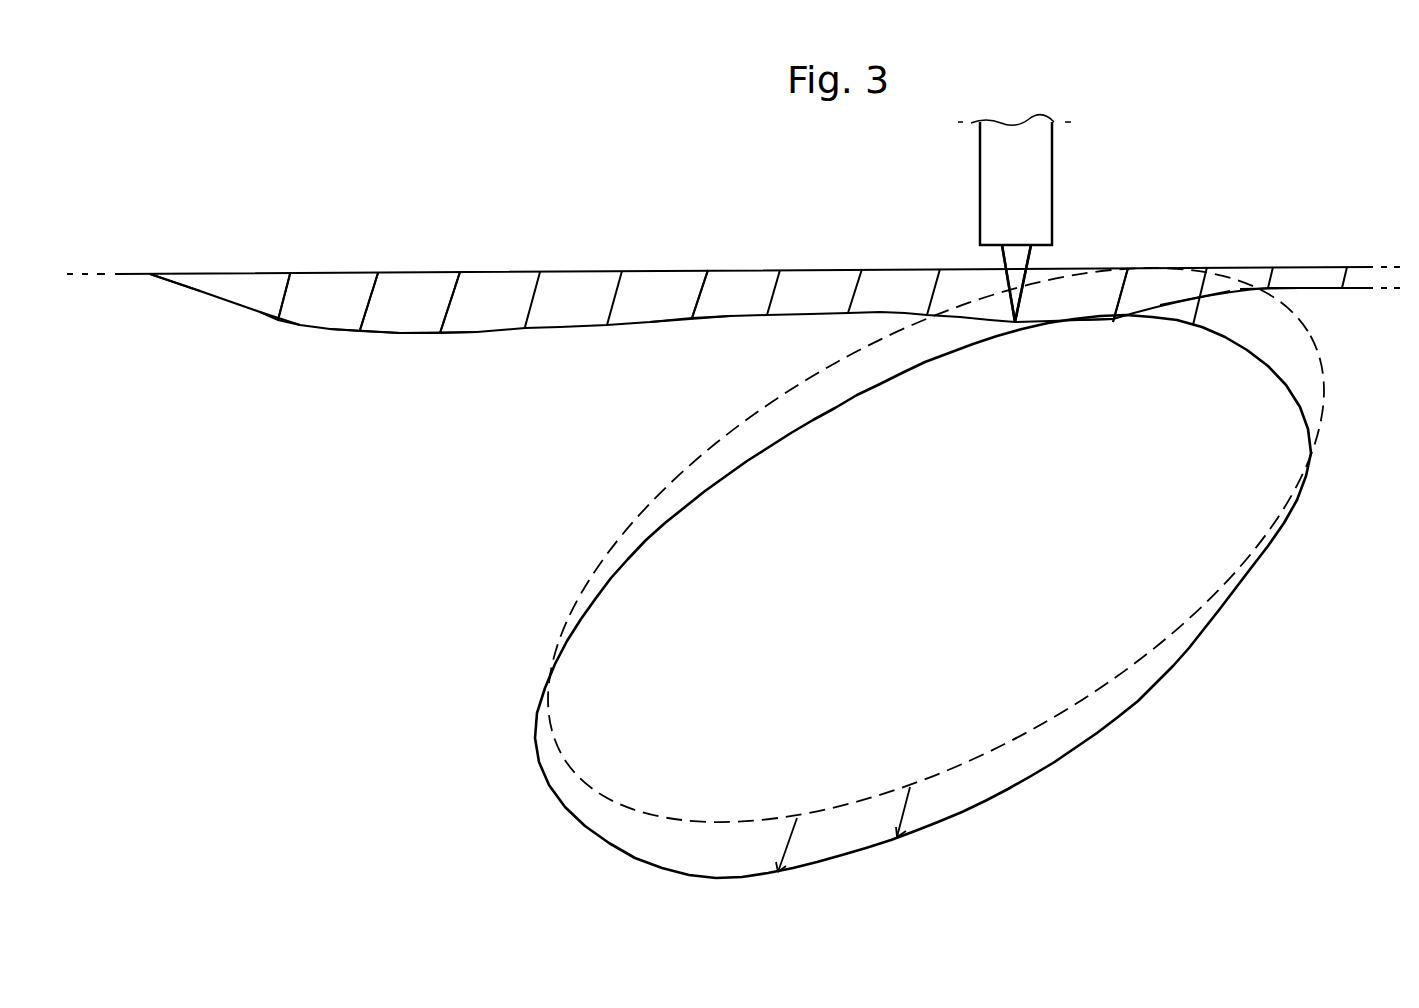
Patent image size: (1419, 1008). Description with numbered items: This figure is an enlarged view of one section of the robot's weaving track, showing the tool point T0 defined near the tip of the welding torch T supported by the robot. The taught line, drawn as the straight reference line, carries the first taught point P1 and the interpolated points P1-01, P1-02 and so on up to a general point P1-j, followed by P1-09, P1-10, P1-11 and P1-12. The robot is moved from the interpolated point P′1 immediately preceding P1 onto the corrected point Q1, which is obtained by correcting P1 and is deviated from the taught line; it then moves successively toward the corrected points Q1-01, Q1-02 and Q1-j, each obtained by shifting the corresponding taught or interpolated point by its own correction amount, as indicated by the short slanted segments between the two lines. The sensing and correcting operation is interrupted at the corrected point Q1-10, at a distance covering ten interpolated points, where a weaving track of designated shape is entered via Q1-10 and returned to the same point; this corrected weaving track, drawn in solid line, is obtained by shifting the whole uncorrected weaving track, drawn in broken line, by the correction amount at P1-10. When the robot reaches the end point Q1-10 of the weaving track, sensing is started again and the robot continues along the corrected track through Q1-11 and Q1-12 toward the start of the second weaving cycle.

The interpolated point P′1 is at (150, 274).
The first taught point P1 is at (290, 274).
The interpolated point P1-01 is at (378, 273).
The interpolated point P1-02 is at (460, 272).
The interpolated point P1-j is at (708, 270).
The interpolated point P1-09 is at (1033, 267).
The interpolated point P1-10 is at (1128, 268).
The interpolated point P1-11 is at (1207, 267).
The interpolated point P1-12 is at (1273, 267).
The corrected point Q1 is at (278, 320).
The corrected point Q1-01 is at (360, 330).
The corrected point Q1-02 is at (440, 333).
The corrected point Q1-j is at (692, 318).
The corrected point Q1-10 is at (1113, 322).
The corrected point Q1-11 is at (1193, 325).
The corrected point Q1-12 is at (1268, 290).
The welding torch T is at (1040, 162).
The tool point T0 is at (1012, 318).